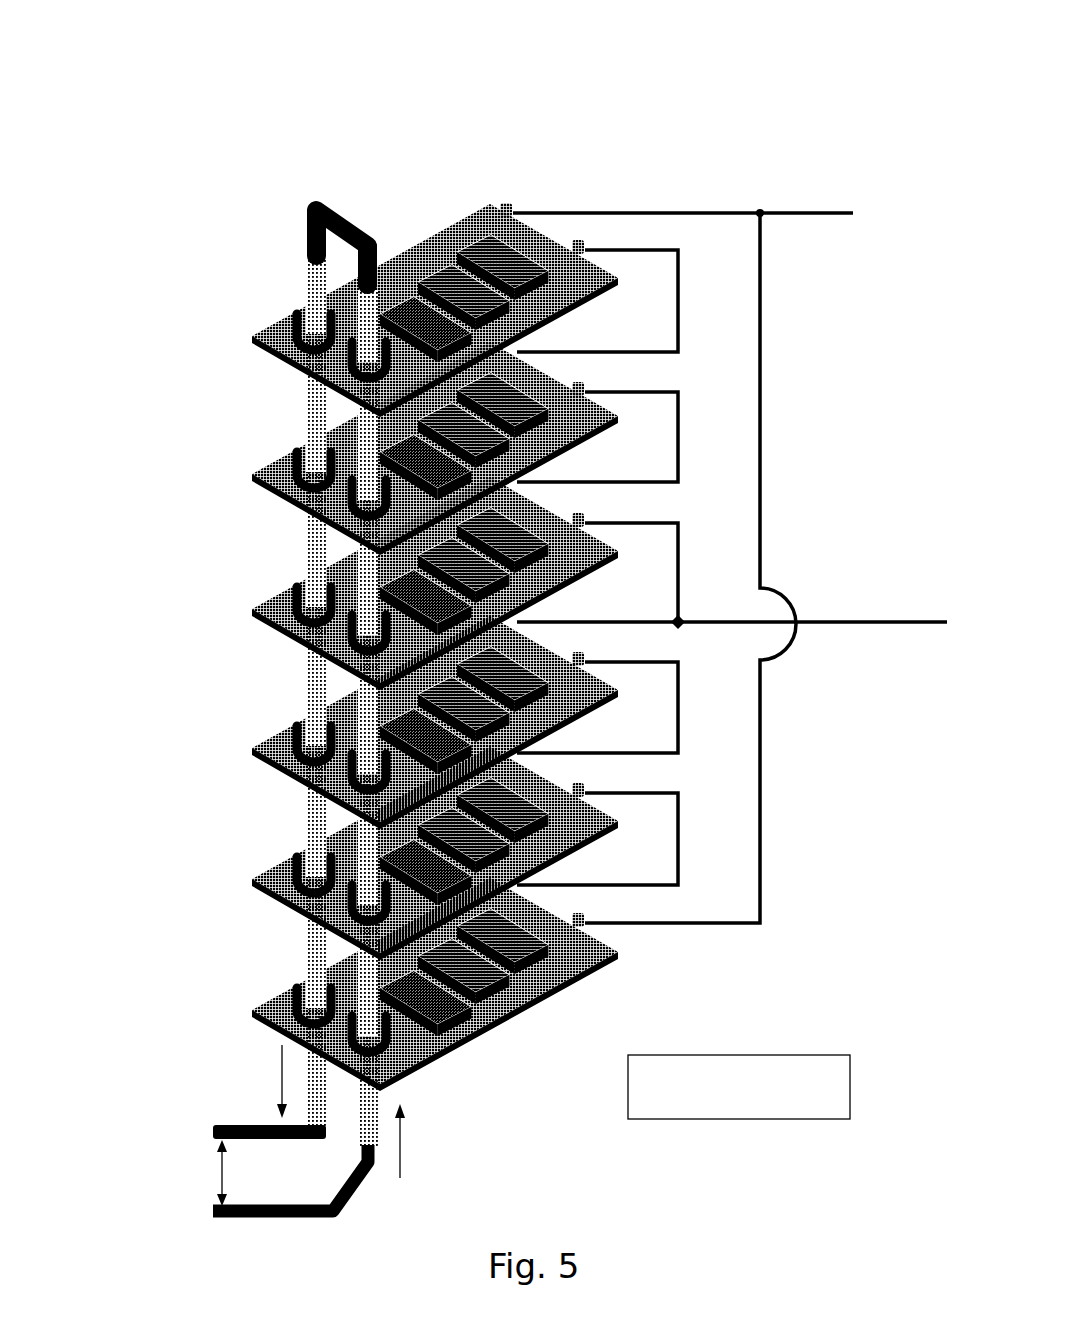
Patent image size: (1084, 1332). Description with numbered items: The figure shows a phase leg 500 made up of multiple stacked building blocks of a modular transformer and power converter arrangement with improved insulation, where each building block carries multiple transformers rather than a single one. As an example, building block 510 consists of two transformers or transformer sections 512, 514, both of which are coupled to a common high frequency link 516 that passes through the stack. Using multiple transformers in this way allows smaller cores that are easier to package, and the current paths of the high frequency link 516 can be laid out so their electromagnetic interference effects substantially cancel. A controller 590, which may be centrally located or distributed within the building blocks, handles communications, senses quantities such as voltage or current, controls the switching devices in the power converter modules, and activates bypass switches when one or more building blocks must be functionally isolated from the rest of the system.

The phase leg 500 is at (280, 118).
The building block 510 is at (280, 313).
The transformer section 512 is at (294, 340).
The transformer section 514 is at (350, 360).
The high frequency link 516 is at (218, 1168).
The controller 590 is at (858, 1088).